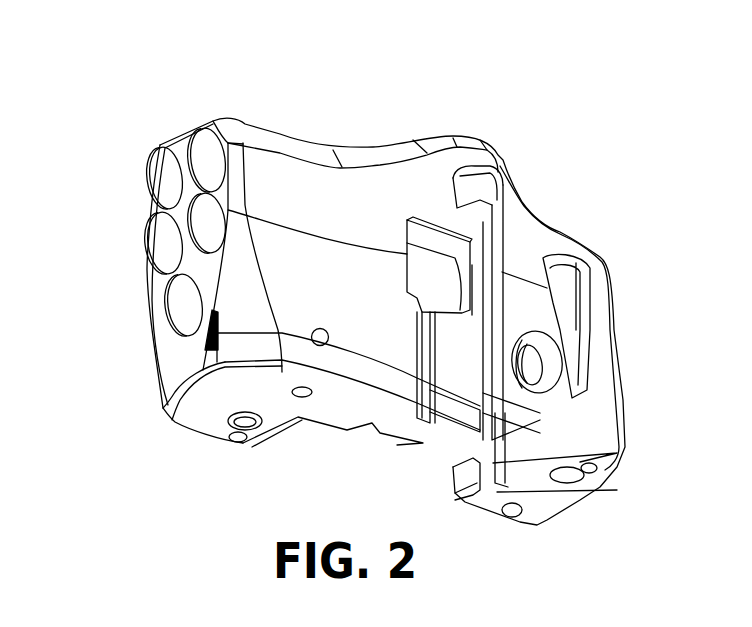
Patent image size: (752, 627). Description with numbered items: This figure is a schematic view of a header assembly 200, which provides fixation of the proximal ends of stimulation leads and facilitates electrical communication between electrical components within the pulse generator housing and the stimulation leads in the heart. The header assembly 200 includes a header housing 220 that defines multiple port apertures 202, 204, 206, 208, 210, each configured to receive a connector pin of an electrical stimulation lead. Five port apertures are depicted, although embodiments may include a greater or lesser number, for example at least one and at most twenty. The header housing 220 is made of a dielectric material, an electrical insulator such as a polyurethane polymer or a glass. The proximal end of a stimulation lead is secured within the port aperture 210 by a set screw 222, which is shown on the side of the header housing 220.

The header assembly 200 is at (414, 118).
The port aperture 202 is at (210, 160).
The port aperture 204 is at (158, 188).
The port aperture 206 is at (158, 247).
The port aperture 208 is at (198, 252).
The port aperture 210 is at (183, 320).
The header housing 220 is at (300, 183).
The set screw 222 is at (545, 372).